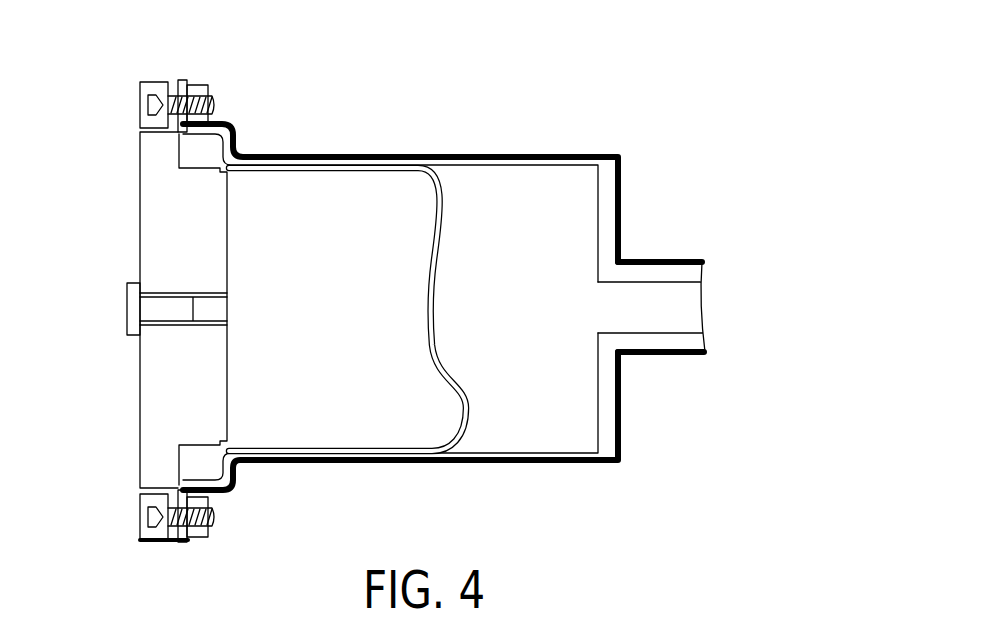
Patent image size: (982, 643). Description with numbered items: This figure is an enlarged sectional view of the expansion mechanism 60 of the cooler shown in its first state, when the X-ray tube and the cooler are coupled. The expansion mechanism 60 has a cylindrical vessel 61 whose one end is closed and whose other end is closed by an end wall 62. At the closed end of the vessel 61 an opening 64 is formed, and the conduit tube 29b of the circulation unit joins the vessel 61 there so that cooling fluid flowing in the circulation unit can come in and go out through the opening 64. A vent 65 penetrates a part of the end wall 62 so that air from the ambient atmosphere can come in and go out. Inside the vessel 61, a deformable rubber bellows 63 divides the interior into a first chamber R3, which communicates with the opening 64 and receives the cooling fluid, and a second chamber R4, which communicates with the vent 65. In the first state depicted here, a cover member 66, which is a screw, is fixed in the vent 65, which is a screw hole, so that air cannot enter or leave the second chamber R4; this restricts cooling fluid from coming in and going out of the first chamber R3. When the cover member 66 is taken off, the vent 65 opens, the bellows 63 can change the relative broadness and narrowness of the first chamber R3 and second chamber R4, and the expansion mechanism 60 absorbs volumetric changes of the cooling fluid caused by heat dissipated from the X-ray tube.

The expansion mechanism 60 is at (393, 287).
The vessel 61 is at (584, 463).
The end wall 62 is at (148, 183).
The bellows 63 is at (497, 175).
The opening 64 is at (612, 333).
The vent 65 is at (212, 320).
The cover member 66 is at (127, 332).
The conduit tube 29b is at (683, 262).
The first chamber R3 is at (497, 437).
The second chamber R4 is at (330, 437).